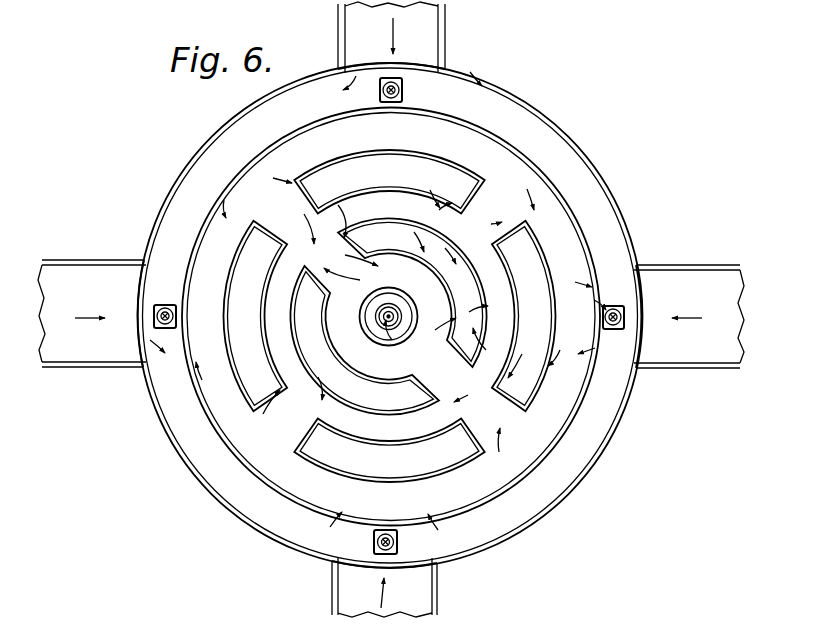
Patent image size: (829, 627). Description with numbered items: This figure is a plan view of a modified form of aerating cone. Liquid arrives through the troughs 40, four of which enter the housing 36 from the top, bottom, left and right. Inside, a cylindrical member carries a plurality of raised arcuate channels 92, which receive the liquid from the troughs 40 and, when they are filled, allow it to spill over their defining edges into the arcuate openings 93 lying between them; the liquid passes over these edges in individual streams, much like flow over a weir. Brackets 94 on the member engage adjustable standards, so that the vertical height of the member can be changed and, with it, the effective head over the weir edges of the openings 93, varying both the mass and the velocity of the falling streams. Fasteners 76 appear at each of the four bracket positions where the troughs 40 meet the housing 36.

The housing 36 is at (156, 420).
The trough 40 is at (428, 38).
The screw 76 is at (405, 94).
The raised arcuate channel 92 is at (333, 413).
The opening 93 is at (257, 232).
The bracket 94 is at (403, 80).